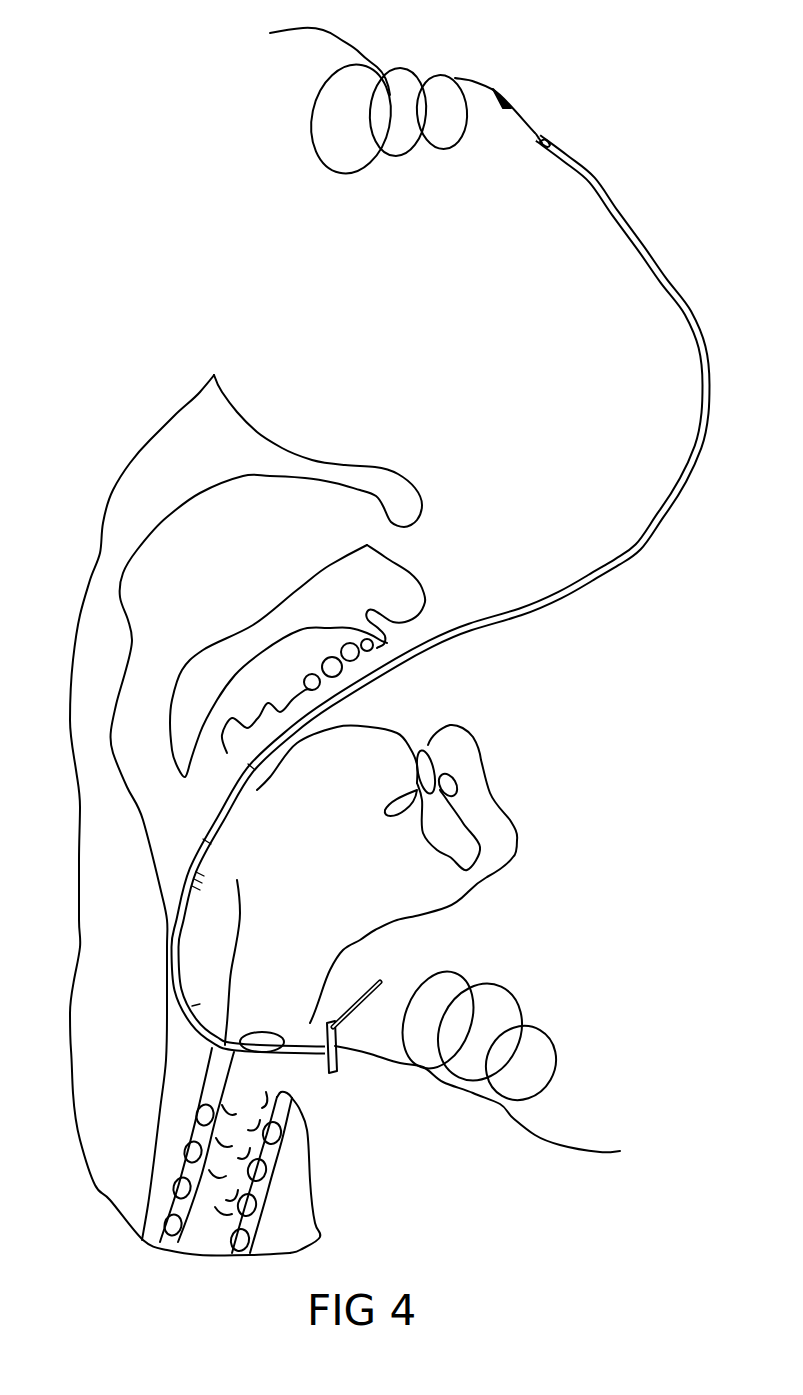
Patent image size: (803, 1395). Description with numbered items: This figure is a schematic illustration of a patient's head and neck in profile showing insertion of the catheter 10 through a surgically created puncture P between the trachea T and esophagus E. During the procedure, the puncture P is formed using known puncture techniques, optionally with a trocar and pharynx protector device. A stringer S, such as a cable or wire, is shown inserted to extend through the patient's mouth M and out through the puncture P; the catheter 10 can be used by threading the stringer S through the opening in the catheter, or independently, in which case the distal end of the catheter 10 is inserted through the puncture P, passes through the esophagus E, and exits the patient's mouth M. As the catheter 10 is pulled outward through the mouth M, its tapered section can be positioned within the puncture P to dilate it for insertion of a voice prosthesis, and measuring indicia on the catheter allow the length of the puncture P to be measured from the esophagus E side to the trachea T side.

The catheter 10 is at (645, 255).
The stringer S is at (336, 36).
The mouth M is at (366, 700).
The esophagus E is at (223, 913).
The puncture P is at (210, 1047).
The trachea T is at (210, 1233).